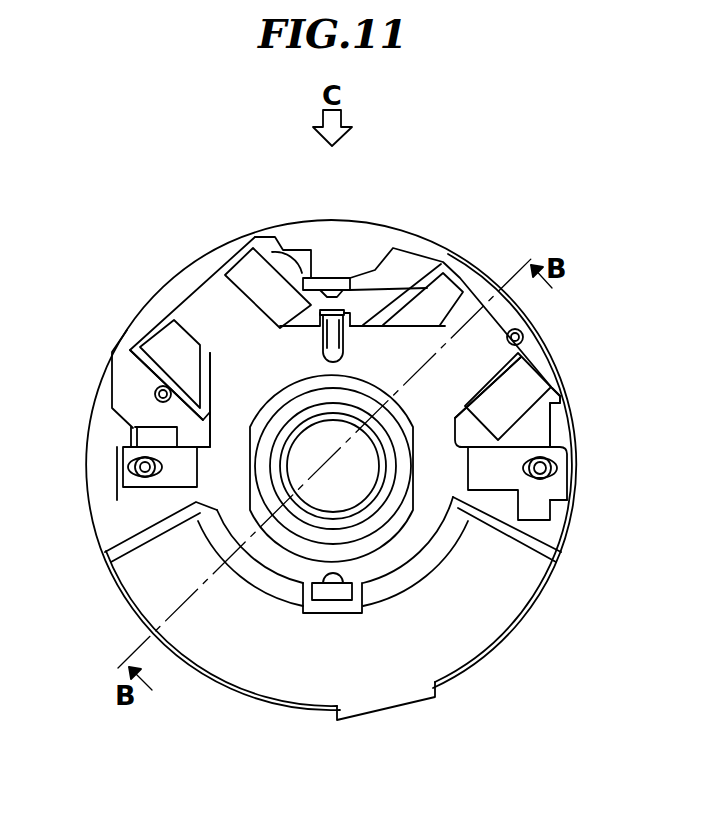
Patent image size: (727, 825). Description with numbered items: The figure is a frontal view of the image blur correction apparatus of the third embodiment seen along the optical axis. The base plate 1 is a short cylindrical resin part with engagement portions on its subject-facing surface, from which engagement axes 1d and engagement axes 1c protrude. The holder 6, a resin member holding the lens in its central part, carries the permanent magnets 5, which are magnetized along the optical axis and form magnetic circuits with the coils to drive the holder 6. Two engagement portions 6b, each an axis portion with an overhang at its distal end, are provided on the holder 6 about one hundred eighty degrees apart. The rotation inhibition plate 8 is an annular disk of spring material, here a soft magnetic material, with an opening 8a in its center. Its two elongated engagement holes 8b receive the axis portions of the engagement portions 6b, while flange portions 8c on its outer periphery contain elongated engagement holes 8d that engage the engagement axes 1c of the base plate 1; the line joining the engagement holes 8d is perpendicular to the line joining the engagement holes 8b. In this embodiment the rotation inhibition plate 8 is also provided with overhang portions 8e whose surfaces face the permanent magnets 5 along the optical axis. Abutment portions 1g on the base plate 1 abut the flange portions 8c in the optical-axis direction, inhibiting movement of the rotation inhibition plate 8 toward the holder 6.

The base plate 1 is at (328, 232).
The engagement axes 1c is at (132, 478).
The engagement axes 1d is at (158, 391).
The abutment portions 1g is at (122, 437).
The permanent magnets 5 is at (190, 375).
The holder 6 is at (300, 256).
The engagement portions 6b is at (343, 345).
The rotation inhibition plate 8 is at (367, 338).
The opening 8a is at (410, 520).
The engagement holes 8b is at (343, 352).
The flange portions 8c is at (140, 428).
The engagement holes 8d is at (135, 466).
The overhang portions 8e is at (175, 340).